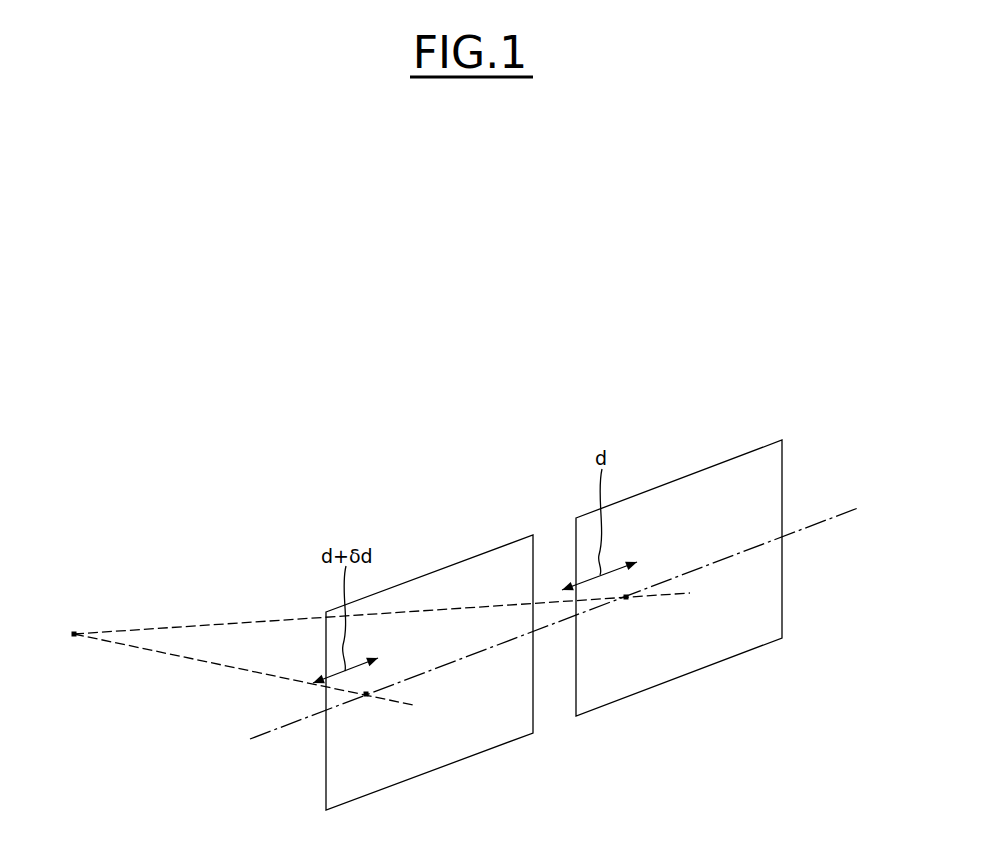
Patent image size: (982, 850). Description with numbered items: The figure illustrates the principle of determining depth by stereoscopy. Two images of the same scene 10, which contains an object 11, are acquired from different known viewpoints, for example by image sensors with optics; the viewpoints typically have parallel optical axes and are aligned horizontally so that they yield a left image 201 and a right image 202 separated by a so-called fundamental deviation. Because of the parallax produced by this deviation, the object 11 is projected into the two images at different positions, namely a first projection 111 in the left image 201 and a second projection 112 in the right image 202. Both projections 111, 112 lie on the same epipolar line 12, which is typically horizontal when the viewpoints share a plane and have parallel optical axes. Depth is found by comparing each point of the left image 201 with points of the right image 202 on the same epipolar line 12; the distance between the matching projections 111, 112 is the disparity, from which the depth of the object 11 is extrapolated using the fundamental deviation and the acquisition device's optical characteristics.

The scene 10 is at (144, 590).
The object 11 is at (74, 638).
The epipolar line 12 is at (833, 517).
The projection of the object in the left image 111 is at (366, 698).
The projection of the object in the right image 112 is at (626, 601).
The left image 201 is at (431, 773).
The right image 202 is at (678, 679).